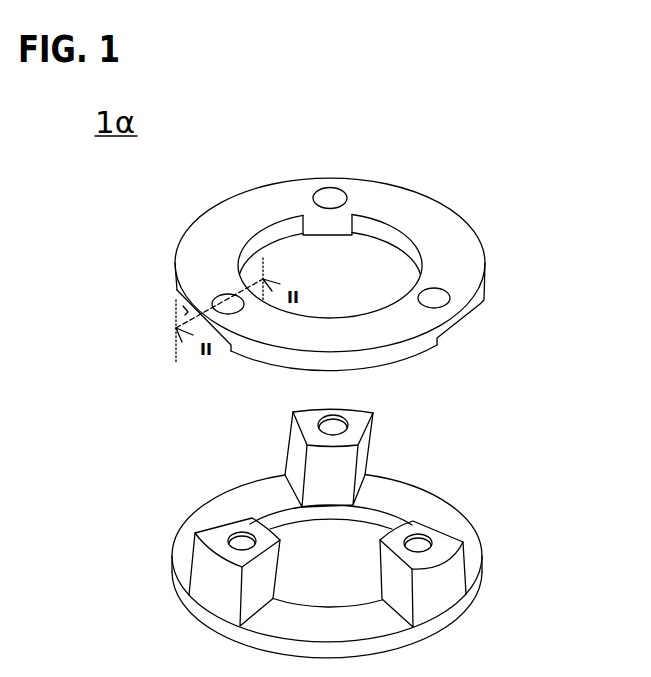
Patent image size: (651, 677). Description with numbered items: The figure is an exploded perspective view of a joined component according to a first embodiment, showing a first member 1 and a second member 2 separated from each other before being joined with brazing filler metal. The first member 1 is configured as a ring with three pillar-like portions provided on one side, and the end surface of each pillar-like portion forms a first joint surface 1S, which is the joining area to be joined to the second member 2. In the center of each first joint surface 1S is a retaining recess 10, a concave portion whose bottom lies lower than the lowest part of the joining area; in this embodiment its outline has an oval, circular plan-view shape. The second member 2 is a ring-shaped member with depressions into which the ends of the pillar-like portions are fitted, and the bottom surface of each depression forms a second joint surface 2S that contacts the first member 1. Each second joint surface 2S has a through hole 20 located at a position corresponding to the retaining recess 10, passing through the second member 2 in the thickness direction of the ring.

The first member 1 is at (194, 513).
The first joint surface 1S is at (205, 524).
The retaining recess 10 is at (242, 539).
The second member 2 is at (467, 223).
The through hole 20 is at (227, 302).
The second joint surface 2S is at (230, 347).